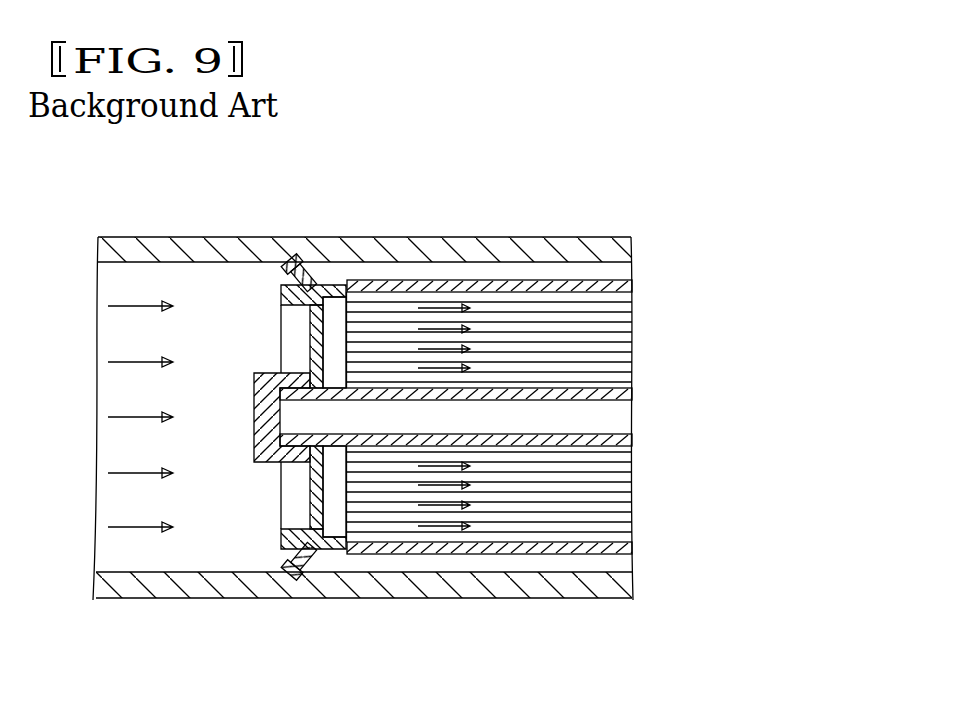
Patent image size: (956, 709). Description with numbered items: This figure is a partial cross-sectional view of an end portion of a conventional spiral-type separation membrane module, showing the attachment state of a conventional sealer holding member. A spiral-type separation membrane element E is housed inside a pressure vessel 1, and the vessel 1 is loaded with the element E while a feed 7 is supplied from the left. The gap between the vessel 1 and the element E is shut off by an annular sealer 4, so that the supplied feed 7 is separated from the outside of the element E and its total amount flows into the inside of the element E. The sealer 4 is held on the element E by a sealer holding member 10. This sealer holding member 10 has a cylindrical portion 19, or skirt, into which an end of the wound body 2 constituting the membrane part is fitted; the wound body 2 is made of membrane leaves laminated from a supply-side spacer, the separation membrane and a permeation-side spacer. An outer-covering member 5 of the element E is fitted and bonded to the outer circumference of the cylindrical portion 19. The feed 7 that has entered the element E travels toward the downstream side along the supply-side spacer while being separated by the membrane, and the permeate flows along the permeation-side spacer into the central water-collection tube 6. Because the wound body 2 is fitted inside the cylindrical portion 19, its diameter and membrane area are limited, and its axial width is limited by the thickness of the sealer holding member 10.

The pressure vessel 1 is at (198, 245).
The wound body 2 is at (612, 327).
The annular sealer 4 is at (318, 277).
The outer-covering member 5 is at (550, 280).
The water-collection tube 6 is at (605, 412).
The feed 7 is at (143, 306).
The sealer holding member 10 is at (338, 273).
The cylindrical portion 19 is at (360, 552).
The spiral-type separation membrane element E is at (490, 361).